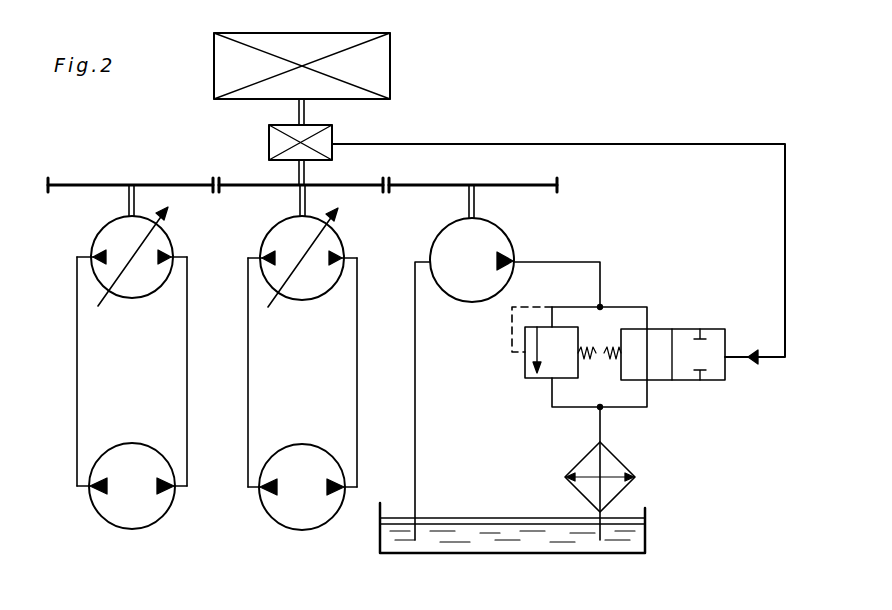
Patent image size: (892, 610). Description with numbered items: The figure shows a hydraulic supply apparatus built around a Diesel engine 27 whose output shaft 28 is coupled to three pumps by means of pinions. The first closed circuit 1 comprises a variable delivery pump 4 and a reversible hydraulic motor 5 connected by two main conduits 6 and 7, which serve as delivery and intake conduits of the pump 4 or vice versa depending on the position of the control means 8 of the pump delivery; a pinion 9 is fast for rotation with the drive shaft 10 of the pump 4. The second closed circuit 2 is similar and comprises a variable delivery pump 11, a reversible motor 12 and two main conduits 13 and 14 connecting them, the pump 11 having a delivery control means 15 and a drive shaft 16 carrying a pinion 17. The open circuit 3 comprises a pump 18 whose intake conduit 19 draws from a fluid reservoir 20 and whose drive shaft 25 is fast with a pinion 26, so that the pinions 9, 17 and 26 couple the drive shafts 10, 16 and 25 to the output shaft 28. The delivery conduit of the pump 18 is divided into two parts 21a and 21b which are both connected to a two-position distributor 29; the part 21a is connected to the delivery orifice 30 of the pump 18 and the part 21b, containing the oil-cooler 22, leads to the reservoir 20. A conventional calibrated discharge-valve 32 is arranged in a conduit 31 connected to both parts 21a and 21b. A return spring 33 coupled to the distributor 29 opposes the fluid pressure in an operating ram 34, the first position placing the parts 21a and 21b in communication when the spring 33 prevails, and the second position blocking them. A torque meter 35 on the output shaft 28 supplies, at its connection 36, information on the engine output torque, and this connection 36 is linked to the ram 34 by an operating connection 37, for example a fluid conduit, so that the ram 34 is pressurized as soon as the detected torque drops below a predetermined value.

The closed circuit 1 is at (186, 404).
The closed circuit 2 is at (357, 403).
The open circuit 3 is at (510, 347).
The variable delivery pump 4 is at (142, 295).
The reversible hydraulic motor 5 is at (139, 452).
The main conduit 6 is at (77, 371).
The main conduit 7 is at (187, 359).
The control means 8 is at (168, 212).
The pinion 9 is at (48, 180).
The drive shaft 10 is at (128, 200).
The variable delivery pump 11 is at (310, 296).
The reversible motor 12 is at (312, 452).
The main conduit 13 is at (248, 371).
The main conduit 14 is at (357, 361).
The delivery control means 15 is at (339, 212).
The drive shaft 16 is at (299, 201).
The pinion 17 is at (216, 178).
The pump 18 is at (484, 297).
The intake conduit 19 is at (416, 436).
The fluid reservoir 20 is at (645, 523).
The delivery conduit part 21a is at (612, 308).
The delivery conduit part 21b is at (601, 431).
The oil-cooler 22 is at (620, 462).
The drive shaft 25 is at (475, 201).
The pinion 26 is at (390, 185).
The Diesel engine 27 is at (300, 42).
The output shaft 28 is at (300, 108).
The two-position distributor 29 is at (696, 329).
The delivery orifice 30 is at (518, 263).
The conduit 31 is at (570, 307).
The calibrated discharge-valve 32 is at (575, 375).
The return spring 33 is at (615, 346).
The operating ram 34 is at (738, 360).
The torque meter 35 is at (332, 136).
The connection 36 is at (338, 147).
The operating connection 37 is at (665, 145).